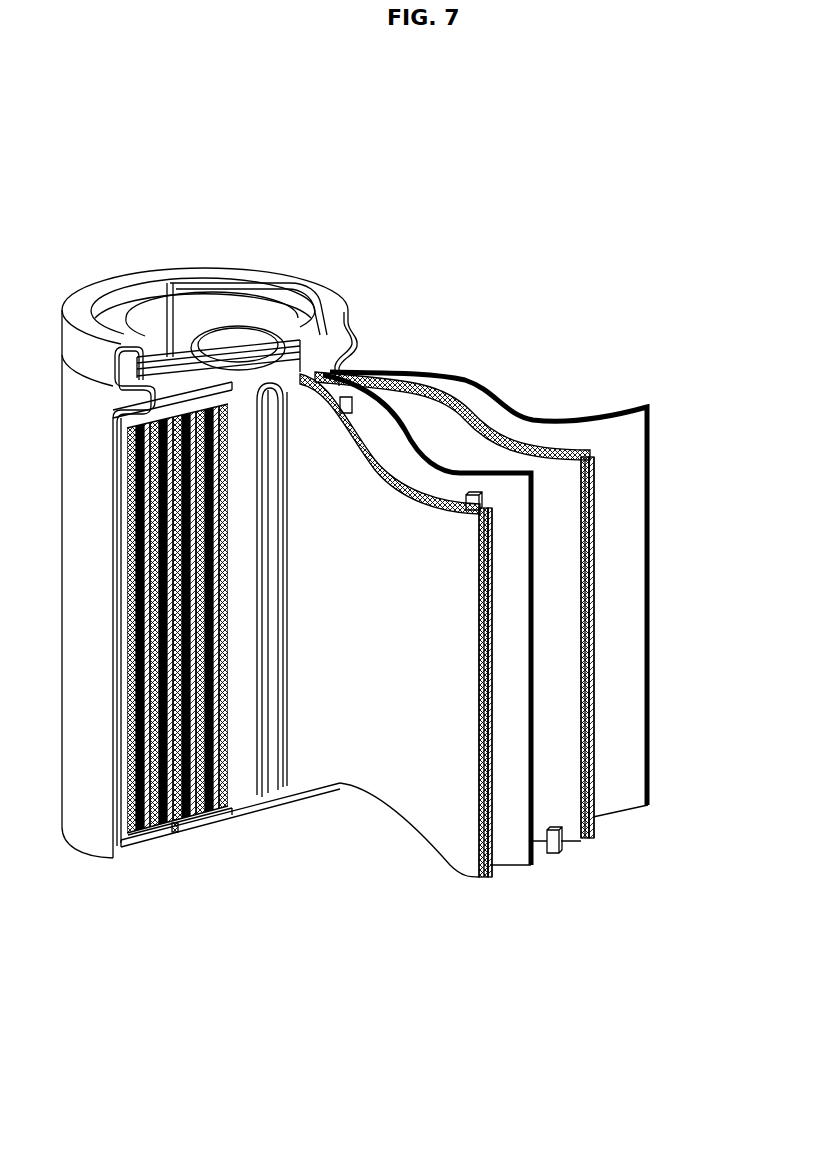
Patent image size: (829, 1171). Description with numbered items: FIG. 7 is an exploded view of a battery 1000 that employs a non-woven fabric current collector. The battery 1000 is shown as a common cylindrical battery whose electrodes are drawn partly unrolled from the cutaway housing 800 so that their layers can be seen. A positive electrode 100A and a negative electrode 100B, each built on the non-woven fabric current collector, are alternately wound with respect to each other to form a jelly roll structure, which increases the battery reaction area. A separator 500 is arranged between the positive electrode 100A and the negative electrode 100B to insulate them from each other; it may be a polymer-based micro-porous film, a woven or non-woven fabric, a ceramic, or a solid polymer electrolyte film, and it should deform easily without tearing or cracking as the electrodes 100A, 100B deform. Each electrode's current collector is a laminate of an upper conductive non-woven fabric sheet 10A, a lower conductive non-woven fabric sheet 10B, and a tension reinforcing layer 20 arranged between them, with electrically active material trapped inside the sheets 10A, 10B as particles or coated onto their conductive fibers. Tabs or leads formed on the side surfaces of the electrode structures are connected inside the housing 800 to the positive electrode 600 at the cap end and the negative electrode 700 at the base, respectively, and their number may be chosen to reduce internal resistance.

The battery 1000 is at (417, 202).
The positive electrode 600 is at (205, 268).
The housing 800 is at (85, 782).
The negative electrode 700 is at (180, 840).
The separator 500 is at (533, 503).
The positive electrode 100A is at (598, 920).
The negative electrode 100B is at (707, 820).
The upper conductive non-woven fabric sheet 10A is at (490, 877).
The tension reinforcing layer 20 is at (487, 877).
The lower conductive non-woven fabric sheet 10B is at (483, 877).